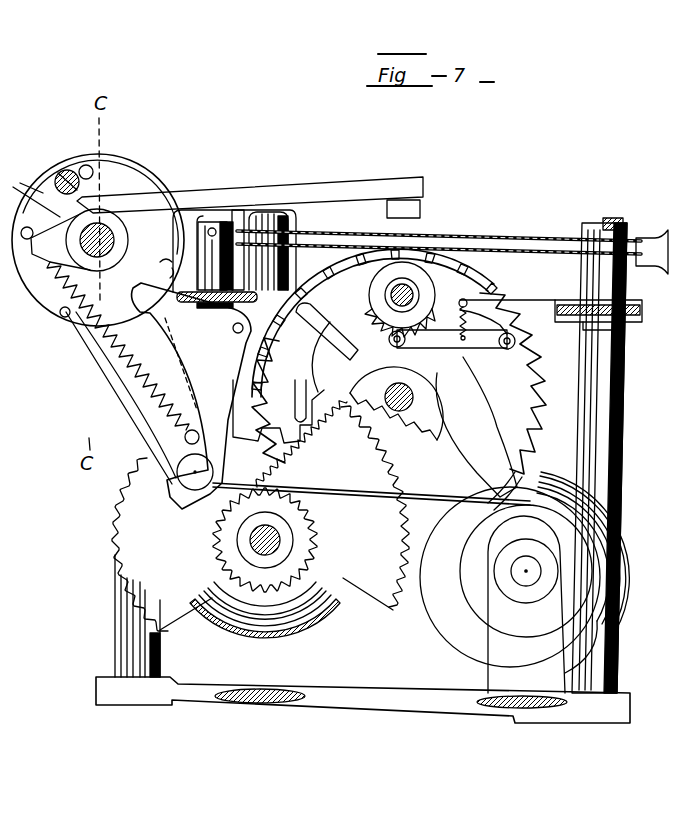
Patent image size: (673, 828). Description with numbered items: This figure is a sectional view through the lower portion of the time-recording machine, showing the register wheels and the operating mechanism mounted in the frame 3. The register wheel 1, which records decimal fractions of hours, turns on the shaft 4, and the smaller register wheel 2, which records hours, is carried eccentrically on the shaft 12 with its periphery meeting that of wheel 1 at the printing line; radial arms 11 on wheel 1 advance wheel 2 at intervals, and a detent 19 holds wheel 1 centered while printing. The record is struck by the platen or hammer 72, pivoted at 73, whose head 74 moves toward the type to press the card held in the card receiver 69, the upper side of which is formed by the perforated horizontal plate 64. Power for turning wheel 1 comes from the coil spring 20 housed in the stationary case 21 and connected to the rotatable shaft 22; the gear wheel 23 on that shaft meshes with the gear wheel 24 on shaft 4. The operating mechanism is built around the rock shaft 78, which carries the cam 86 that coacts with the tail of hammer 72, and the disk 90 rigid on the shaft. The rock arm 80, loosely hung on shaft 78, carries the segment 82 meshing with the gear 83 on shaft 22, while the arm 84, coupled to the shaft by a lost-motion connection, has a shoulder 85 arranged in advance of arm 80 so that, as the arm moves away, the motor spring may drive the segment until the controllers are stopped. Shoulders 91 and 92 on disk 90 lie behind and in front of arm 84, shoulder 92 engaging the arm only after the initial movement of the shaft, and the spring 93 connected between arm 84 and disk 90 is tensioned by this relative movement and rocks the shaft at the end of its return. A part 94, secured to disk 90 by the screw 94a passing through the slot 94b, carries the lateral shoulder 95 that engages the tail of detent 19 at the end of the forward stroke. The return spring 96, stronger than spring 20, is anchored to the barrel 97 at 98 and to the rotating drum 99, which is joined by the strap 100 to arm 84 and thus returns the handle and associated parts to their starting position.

The register wheel 1 is at (547, 390).
The register wheel 2 is at (392, 297).
The frame 3 is at (113, 683).
The shaft 4 is at (412, 397).
The radial arms 11 is at (343, 358).
The shaft 12 is at (408, 293).
The detent 19 is at (233, 412).
The coil spring 20 is at (333, 573).
The stationary case 21 is at (263, 633).
The rotatable shaft 22 is at (252, 543).
The gear wheel 23 is at (130, 557).
The gear wheel 24 is at (382, 452).
The horizontal plate 64 is at (551, 242).
The card receiver 69 is at (652, 260).
The platen 72 is at (360, 190).
The pivot 73 is at (212, 228).
The head 74 is at (420, 207).
The shaft 78 is at (100, 227).
The rock arm 80 is at (110, 382).
The segment 82 is at (277, 460).
The gear 83 is at (305, 547).
The arm 84 is at (143, 407).
The shoulder 85 is at (180, 498).
The cam 86 is at (55, 242).
The disk 90 is at (63, 172).
The shoulder 91 is at (60, 323).
The shoulder 92 is at (156, 271).
The spring 93 is at (115, 352).
The part 94 is at (30, 192).
The screw 94a is at (63, 177).
The slot 94b is at (88, 170).
The shoulder 95 is at (172, 215).
The spring 96 is at (610, 537).
The barrel 97 is at (590, 630).
The spring connection 98 is at (615, 610).
The rotating drum 99 is at (580, 563).
The strap 100 is at (473, 485).